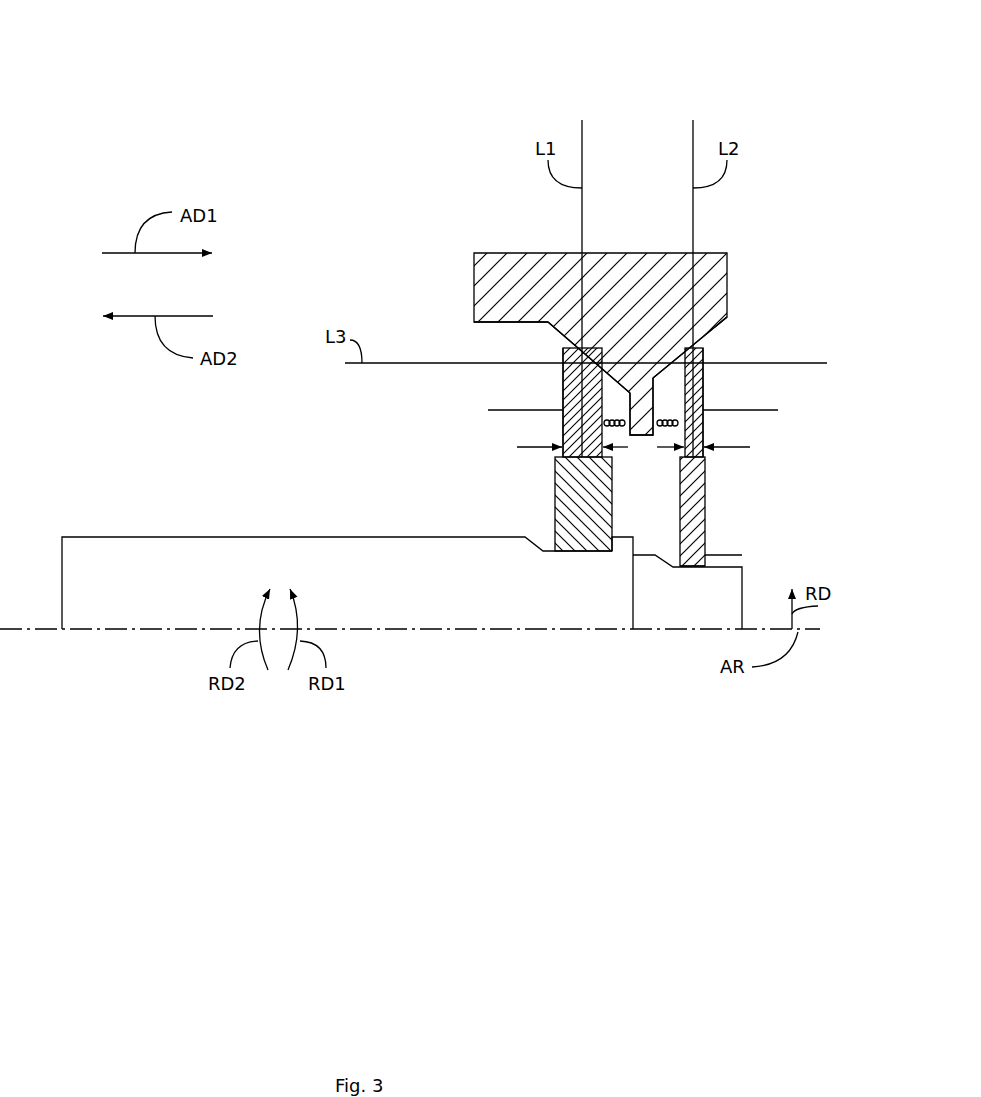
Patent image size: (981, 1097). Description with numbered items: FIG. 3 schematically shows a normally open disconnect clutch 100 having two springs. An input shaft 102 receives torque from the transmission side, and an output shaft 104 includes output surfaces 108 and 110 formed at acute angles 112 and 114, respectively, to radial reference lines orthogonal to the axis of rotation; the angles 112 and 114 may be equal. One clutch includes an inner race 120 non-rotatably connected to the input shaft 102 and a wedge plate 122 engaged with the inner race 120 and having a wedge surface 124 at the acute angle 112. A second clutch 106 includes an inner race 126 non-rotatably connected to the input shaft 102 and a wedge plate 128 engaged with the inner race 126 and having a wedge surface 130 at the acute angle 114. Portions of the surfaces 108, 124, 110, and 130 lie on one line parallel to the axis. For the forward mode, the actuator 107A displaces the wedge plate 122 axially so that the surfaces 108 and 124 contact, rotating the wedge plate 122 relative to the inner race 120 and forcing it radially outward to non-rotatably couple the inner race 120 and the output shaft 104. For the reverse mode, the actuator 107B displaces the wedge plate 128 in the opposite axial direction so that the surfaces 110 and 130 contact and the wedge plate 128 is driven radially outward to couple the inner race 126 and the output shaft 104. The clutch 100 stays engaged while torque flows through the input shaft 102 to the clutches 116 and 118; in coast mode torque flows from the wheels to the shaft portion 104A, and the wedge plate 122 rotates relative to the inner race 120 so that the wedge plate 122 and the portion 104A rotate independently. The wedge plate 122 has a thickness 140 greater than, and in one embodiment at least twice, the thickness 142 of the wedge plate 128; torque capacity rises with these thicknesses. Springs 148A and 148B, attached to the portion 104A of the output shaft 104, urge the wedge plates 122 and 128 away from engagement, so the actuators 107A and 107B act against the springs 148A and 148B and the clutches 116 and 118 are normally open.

The normally open disconnect clutch 100 is at (696, 72).
The input shaft 102 is at (147, 582).
The output shaft 104 is at (472, 293).
The portion of output shaft 104A is at (640, 440).
The clutch 106 is at (759, 292).
The output surface 108 is at (563, 350).
The output surface 110 is at (715, 328).
The acute angle 112 is at (563, 368).
The acute angle 114 is at (703, 350).
The clutch 116 is at (578, 554).
The clutch 118 is at (696, 579).
The inner race 120 is at (554, 507).
The wedge plate 122 is at (562, 430).
The wedge surface 124 is at (583, 358).
The inner race 126 is at (706, 507).
The wedge plate 128 is at (704, 372).
The wedge surface 130 is at (690, 350).
The thickness 140 is at (540, 447).
The thickness 142 is at (728, 447).
The spring 148A is at (615, 420).
The spring 148B is at (667, 420).
The actuator 107A is at (497, 411).
The actuator 107B is at (769, 411).